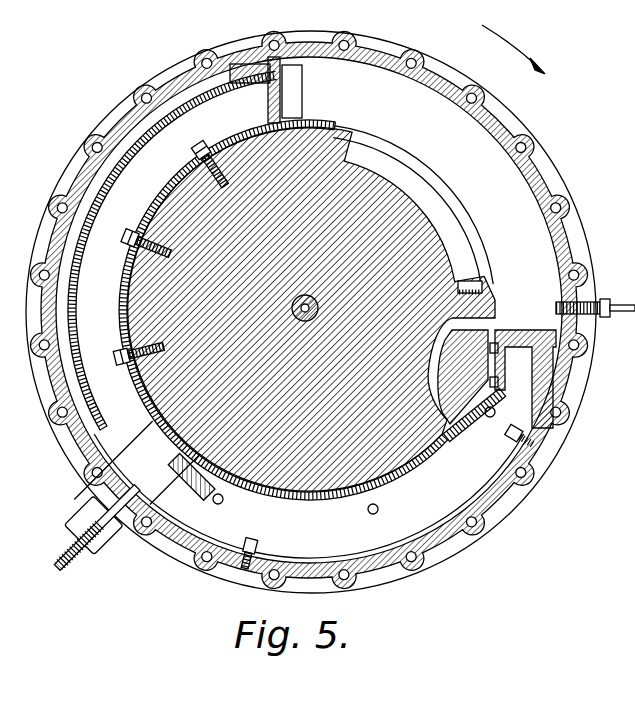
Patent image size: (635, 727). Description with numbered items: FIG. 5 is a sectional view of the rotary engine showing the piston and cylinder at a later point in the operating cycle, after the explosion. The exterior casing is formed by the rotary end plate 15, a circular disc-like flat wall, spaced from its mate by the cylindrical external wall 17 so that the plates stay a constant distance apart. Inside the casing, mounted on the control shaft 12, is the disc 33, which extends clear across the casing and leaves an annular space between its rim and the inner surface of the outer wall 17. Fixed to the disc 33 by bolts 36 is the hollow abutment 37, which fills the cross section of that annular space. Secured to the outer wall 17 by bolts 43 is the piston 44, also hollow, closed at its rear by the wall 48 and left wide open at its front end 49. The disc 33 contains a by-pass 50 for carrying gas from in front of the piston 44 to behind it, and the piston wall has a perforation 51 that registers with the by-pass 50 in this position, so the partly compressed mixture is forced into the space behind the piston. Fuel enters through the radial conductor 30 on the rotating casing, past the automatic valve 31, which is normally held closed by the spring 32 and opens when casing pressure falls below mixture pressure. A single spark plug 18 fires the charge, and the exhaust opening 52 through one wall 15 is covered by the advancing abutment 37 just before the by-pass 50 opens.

The control shaft 12 is at (308, 322).
The rotary end plate 15 is at (385, 32).
The cylindrical external wall 17 is at (445, 84).
The spark plug 18 is at (604, 296).
The radial conductor 30 is at (110, 540).
The automatic valve 31 is at (128, 486).
The spring 32 is at (66, 560).
The disc 33 is at (290, 475).
The bolts 36 is at (118, 352).
The abutment 37 is at (130, 440).
The bolts 43 is at (240, 567).
The piston 44 is at (342, 503).
The wall 48 is at (525, 342).
The front end 49 is at (172, 492).
The by-pass 50 is at (451, 383).
The perforation 51 is at (445, 440).
The exhaust opening 52 is at (302, 78).